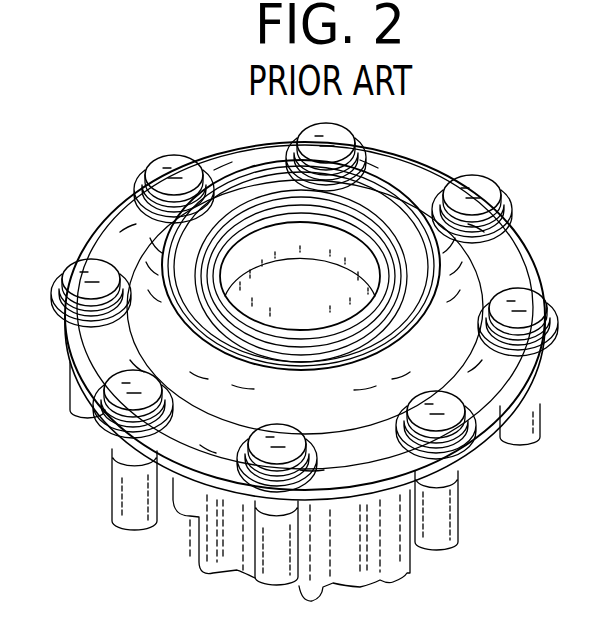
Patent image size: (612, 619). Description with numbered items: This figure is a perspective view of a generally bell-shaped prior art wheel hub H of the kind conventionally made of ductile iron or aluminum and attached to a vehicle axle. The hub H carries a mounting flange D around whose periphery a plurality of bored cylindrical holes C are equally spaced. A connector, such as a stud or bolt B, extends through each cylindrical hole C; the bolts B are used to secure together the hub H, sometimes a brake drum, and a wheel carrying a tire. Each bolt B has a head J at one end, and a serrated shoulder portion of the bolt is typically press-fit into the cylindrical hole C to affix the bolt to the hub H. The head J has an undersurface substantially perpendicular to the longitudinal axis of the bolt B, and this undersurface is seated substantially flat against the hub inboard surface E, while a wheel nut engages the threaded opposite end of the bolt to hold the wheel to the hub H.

The bolt B is at (112, 478).
The bored cylindrical hole C is at (462, 438).
The mounting flange D is at (83, 340).
The hub inboard surface E is at (533, 257).
The wheel hub H is at (200, 548).
The head J is at (147, 172).